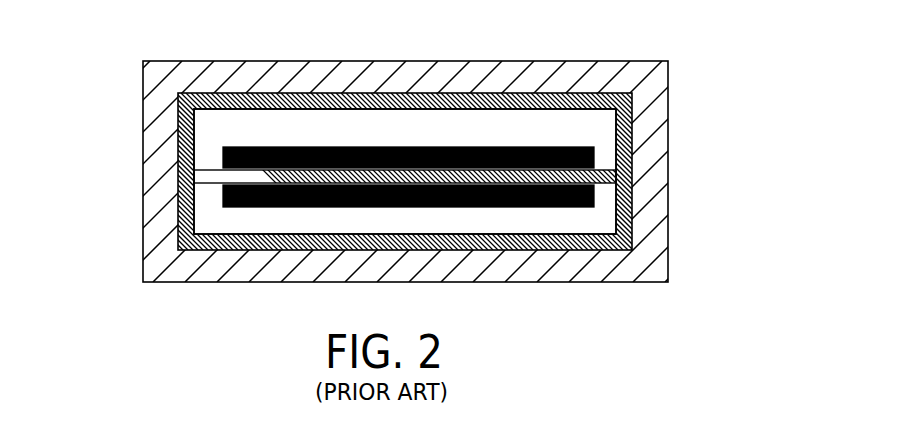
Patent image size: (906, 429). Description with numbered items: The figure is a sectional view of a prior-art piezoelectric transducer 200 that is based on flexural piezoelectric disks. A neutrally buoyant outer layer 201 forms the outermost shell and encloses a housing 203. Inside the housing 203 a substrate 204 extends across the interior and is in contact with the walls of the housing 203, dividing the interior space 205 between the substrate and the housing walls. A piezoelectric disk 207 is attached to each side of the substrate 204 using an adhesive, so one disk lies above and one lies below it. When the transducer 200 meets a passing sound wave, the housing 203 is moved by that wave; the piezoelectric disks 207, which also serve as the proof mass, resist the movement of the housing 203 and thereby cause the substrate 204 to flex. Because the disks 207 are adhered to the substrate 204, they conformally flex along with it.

The piezoelectric transducer 200 is at (722, 66).
The neutrally buoyant outer layer 201 is at (143, 72).
The housing 203 is at (178, 111).
The substrate 204 is at (178, 180).
The interior cavity 205 is at (217, 216).
The piezoelectric disk 207 is at (593, 156).